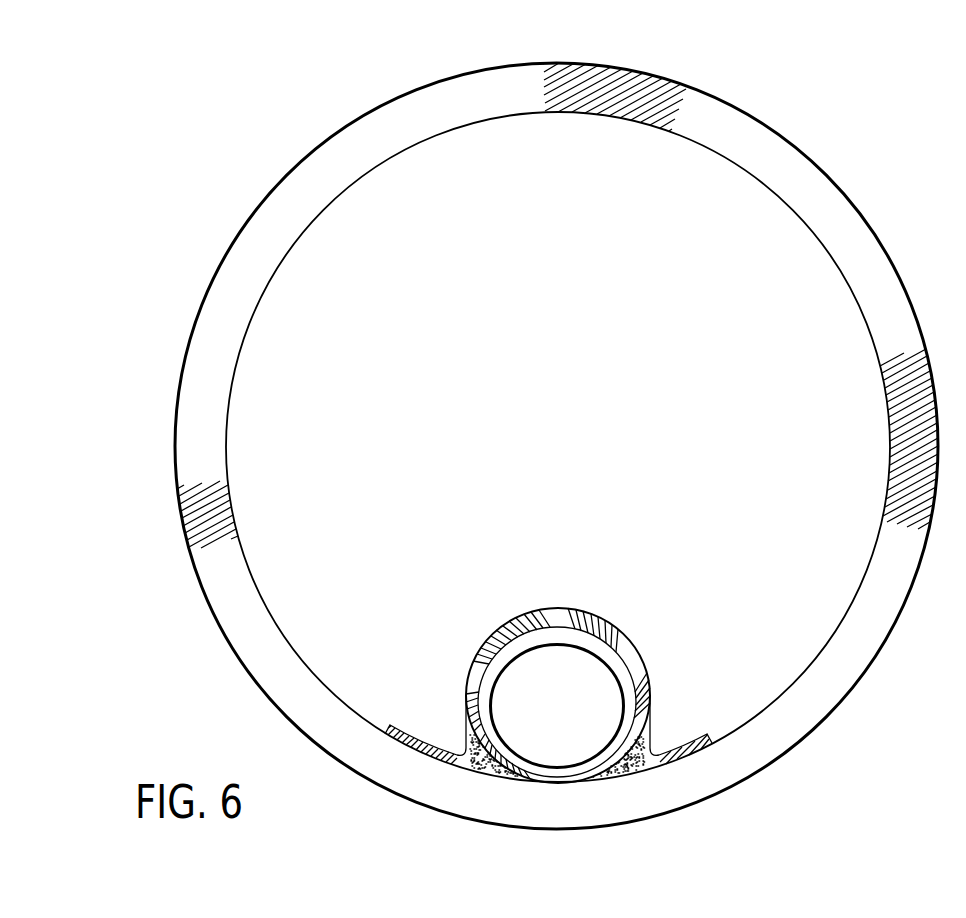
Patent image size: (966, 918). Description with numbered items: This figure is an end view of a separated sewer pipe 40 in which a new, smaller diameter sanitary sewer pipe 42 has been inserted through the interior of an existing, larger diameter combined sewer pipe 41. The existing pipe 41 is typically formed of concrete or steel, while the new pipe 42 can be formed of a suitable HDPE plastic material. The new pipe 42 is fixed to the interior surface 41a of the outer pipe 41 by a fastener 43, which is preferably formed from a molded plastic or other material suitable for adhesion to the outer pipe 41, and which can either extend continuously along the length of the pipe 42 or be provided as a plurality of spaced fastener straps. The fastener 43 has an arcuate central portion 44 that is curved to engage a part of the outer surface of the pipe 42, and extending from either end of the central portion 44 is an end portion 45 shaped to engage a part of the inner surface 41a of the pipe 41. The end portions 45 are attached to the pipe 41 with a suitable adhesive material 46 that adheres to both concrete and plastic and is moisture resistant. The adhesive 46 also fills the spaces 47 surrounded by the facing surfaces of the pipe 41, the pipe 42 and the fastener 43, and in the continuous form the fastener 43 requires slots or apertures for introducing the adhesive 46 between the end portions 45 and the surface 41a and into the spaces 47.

The separated sewer pipe 40 is at (830, 120).
The combined sewer pipe 41 is at (682, 103).
The interior surface 41a is at (660, 128).
The sanitary sewer pipe 42 is at (583, 758).
The fastener 43 is at (619, 627).
The arcuate central portion 44 is at (545, 606).
The end portion 45 is at (416, 730).
The adhesive material 46 is at (410, 752).
The spaces 47 is at (483, 784).